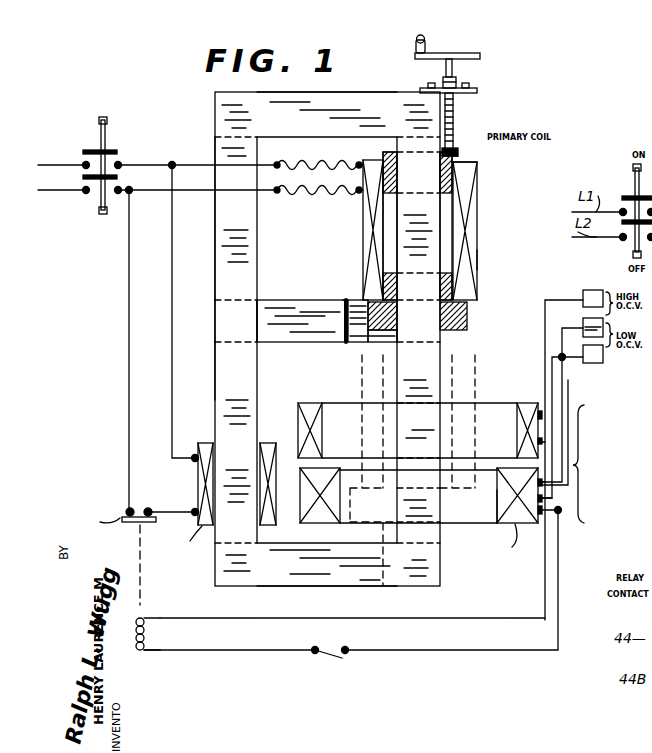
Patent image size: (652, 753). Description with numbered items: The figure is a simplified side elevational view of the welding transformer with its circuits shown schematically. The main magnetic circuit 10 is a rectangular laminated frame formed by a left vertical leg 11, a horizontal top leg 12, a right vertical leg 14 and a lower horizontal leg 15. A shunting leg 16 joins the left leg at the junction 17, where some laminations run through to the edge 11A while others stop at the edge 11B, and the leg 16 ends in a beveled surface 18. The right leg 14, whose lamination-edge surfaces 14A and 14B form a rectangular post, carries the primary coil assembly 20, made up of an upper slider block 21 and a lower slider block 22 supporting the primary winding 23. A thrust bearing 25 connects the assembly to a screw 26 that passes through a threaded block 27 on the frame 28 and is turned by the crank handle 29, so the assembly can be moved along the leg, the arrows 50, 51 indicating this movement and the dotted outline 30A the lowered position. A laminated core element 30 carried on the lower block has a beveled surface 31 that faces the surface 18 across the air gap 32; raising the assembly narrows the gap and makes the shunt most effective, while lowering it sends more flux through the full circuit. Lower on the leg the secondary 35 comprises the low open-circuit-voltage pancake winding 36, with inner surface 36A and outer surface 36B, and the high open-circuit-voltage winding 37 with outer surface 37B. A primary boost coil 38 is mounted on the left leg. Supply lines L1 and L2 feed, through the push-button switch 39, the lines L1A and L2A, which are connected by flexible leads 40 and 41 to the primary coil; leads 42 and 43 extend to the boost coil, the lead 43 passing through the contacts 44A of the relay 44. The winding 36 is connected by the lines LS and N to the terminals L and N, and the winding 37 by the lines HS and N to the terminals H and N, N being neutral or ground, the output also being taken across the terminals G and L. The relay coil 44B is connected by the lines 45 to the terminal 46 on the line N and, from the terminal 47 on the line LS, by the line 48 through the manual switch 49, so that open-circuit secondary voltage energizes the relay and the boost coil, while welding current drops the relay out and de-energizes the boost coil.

The main magnetic circuit 10 is at (309, 339).
The left vertical leg 11 is at (226, 233).
The edge of left leg 11A is at (214, 319).
The edge of left leg 11B is at (262, 336).
The horizontal top leg 12 is at (303, 124).
The right vertical leg 14 is at (447, 340).
The surface of right leg 14A is at (393, 245).
The surface of right leg 14B is at (440, 242).
The lower horizontal leg 15 is at (305, 587).
The shunting leg 16 is at (293, 312).
The junction 17 is at (222, 326).
The beveled surface 18 is at (343, 312).
The primary coil assembly 20 is at (480, 189).
The upper slider block 21 is at (466, 160).
The lower slider block 22 is at (467, 315).
The primary winding 23 is at (474, 260).
The thrust bearing 25 is at (460, 152).
The screw 26 is at (454, 112).
The threaded block 27 is at (457, 84).
The frame 28 is at (478, 91).
The crank handle 29 is at (455, 56).
The core element 30 is at (362, 343).
The movable shunt core 30A is at (517, 432).
The beveled surface 31 is at (343, 340).
The air gap 32 is at (356, 302).
The secondary 35 is at (594, 464).
The low open circuit voltage coil 36 is at (538, 523).
The inner diameter surface 36A is at (497, 503).
The outer diameter surface 36B is at (556, 498).
The high open circuit voltage coil 37 is at (521, 406).
The outer diameter surface 37B is at (548, 440).
The primary boost coil 38 is at (198, 485).
The push button On-Off switch 39 is at (93, 201).
The flexible lead 40 is at (297, 172).
The flexible lead 41 is at (316, 196).
The lead 42 is at (170, 291).
The lead 43 is at (128, 305).
The relay 44 is at (146, 612).
The relay contacts 44A is at (130, 509).
The relay coil 44B is at (140, 656).
The lines 45 is at (235, 619).
The terminal 46 is at (547, 470).
The terminal 47 is at (561, 514).
The line 48 is at (532, 651).
The manual control switch 49 is at (331, 650).
The direction arrow 50 is at (483, 299).
The arrow 51 is at (487, 152).
The supply line L1 is at (55, 165).
The supply line L2 is at (55, 190).
The supply line L1A is at (138, 152).
The supply line L2A is at (150, 193).
The terminal H is at (584, 290).
The terminal G is at (605, 328).
The terminal L is at (601, 352).
The neutral line and terminal N is at (565, 380).
The line HS is at (545, 331).
The line LS is at (568, 480).